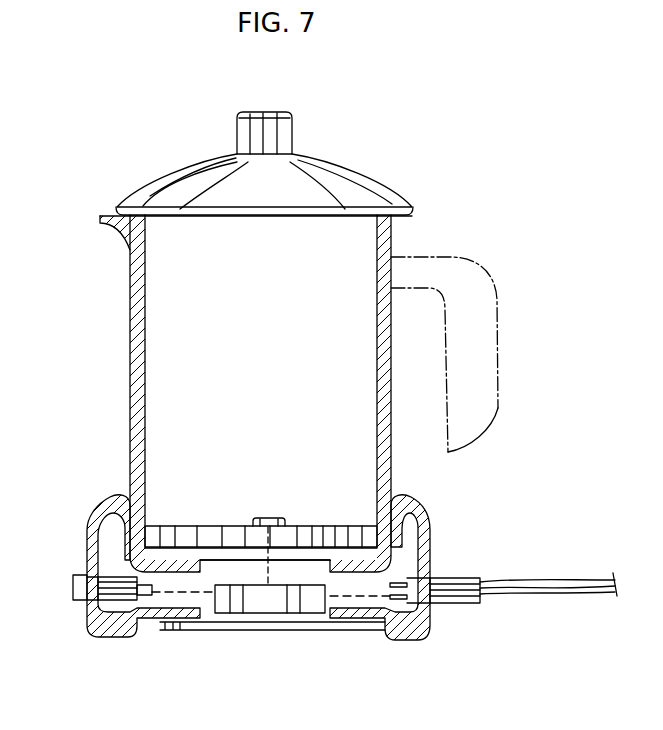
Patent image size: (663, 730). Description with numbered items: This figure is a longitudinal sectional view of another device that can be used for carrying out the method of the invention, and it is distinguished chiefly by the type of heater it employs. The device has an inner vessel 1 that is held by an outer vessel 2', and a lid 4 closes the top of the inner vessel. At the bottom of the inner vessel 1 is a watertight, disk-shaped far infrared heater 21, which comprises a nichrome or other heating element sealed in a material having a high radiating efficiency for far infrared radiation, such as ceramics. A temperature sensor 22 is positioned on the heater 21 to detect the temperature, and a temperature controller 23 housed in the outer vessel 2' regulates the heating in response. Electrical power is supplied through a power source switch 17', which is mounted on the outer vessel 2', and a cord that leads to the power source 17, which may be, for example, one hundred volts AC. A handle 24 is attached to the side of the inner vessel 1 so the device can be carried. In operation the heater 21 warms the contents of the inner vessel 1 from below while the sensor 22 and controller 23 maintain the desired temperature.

The inner vessel 1 is at (126, 385).
The lid 4 is at (388, 203).
The far infrared heater 21 is at (208, 537).
The temperature sensor 22 is at (282, 518).
The temperature controller 23 is at (293, 613).
The handle 24 is at (475, 410).
The outer vessel 2' is at (282, 567).
The power source switch 17' is at (88, 590).
The power source 17 is at (516, 570).